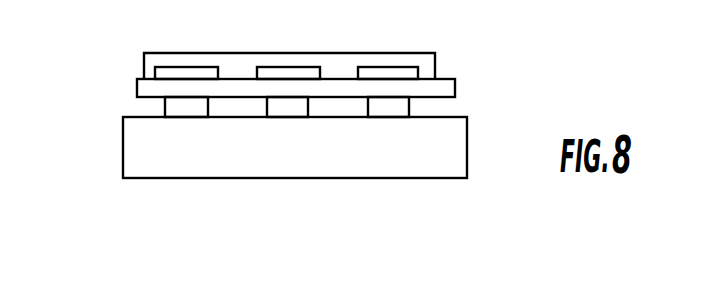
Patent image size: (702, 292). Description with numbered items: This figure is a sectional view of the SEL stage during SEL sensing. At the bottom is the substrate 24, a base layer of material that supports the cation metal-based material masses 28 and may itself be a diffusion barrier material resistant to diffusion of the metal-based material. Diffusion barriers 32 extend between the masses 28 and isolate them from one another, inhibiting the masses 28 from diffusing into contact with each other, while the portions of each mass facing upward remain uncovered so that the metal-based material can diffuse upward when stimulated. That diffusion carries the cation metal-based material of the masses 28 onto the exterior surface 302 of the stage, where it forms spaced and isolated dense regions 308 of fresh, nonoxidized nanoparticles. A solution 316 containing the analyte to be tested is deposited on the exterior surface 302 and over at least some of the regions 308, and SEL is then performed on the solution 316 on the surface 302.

The substrate 24 is at (467, 142).
The cation metal-based material masses 28 is at (208, 104).
The diffusion barriers 32 is at (152, 113).
The exterior surface 302 is at (446, 78).
The regions 308 is at (377, 77).
The solution 316 is at (156, 52).